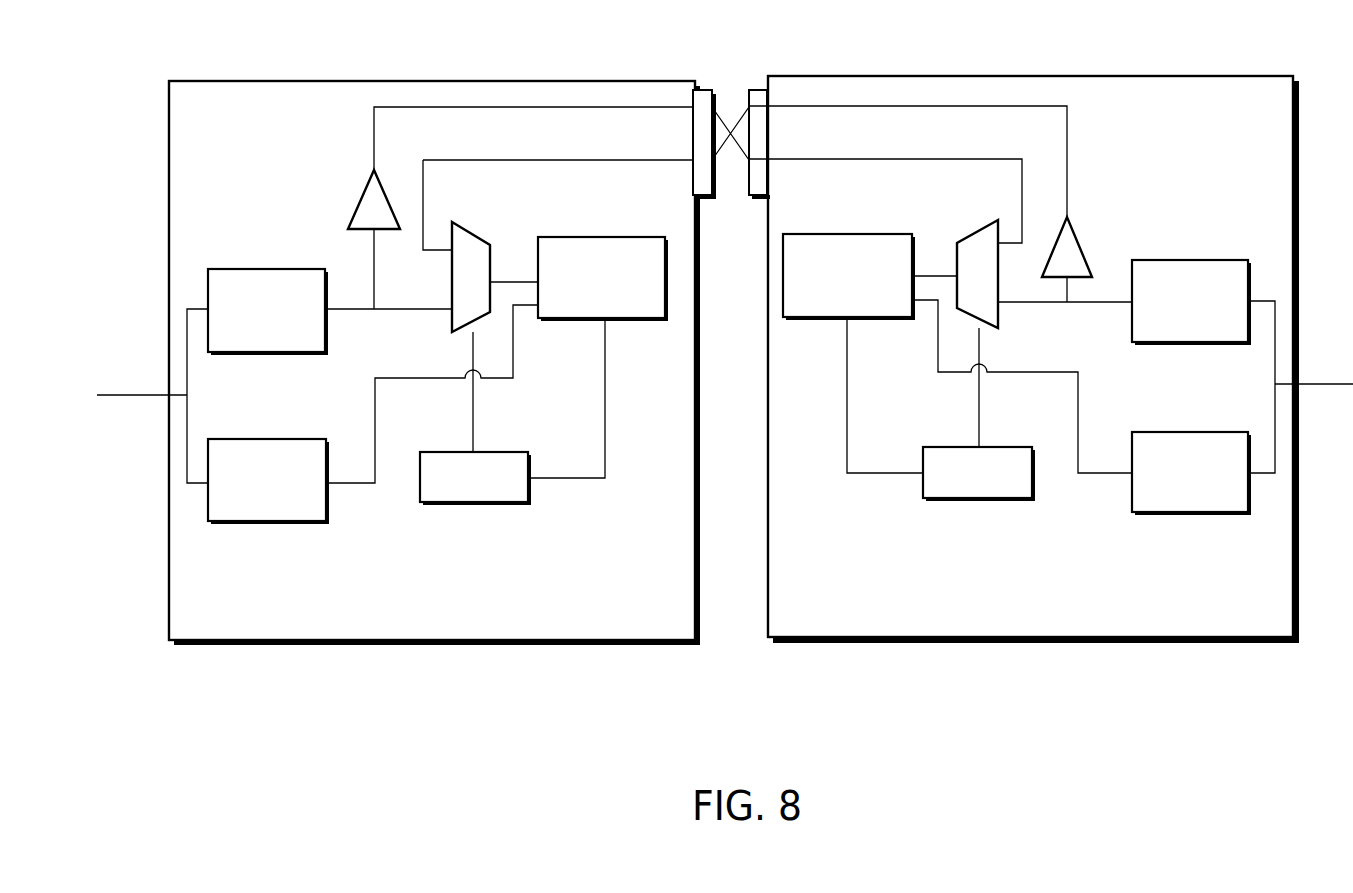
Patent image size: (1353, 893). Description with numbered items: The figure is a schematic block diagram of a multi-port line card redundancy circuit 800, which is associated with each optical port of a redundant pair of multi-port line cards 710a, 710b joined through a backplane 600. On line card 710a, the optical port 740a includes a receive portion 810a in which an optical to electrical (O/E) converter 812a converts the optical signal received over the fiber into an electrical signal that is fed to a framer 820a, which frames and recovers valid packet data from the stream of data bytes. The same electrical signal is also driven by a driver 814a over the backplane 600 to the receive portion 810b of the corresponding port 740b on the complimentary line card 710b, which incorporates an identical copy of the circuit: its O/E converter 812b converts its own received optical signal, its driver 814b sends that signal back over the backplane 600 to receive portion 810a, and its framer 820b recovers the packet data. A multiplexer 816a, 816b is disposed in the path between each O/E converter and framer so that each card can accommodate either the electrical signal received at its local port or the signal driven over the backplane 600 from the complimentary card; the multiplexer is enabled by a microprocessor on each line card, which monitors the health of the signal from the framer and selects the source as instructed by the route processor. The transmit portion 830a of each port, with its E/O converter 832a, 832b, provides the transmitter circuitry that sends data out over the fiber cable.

The multi-port line card redundancy circuit 800 is at (133, 81).
The line card 710a is at (404, 363).
The complimentary line card 710b is at (1051, 359).
The backplane 600 is at (730, 177).
The receive portion 810a is at (311, 232).
The receive portion 810b is at (1192, 224).
The optical to electrical (O/E) converter 812a is at (268, 312).
The optical to electrical (O/E) converter 812b is at (1191, 302).
The driver 814a is at (368, 182).
The driver 814b is at (1082, 236).
The multiplexer 816a is at (471, 236).
The multiplexer 816b is at (980, 228).
The framer 820a is at (603, 279).
The framer 820b is at (849, 277).
The transmit portion 830a is at (364, 545).
The electrical to optical (E/O) converter 832a is at (268, 481).
The electrical to optical (E/O) converter 832b is at (1191, 473).
The optical port 740a is at (209, 396).
The optical port 740b is at (1252, 387).